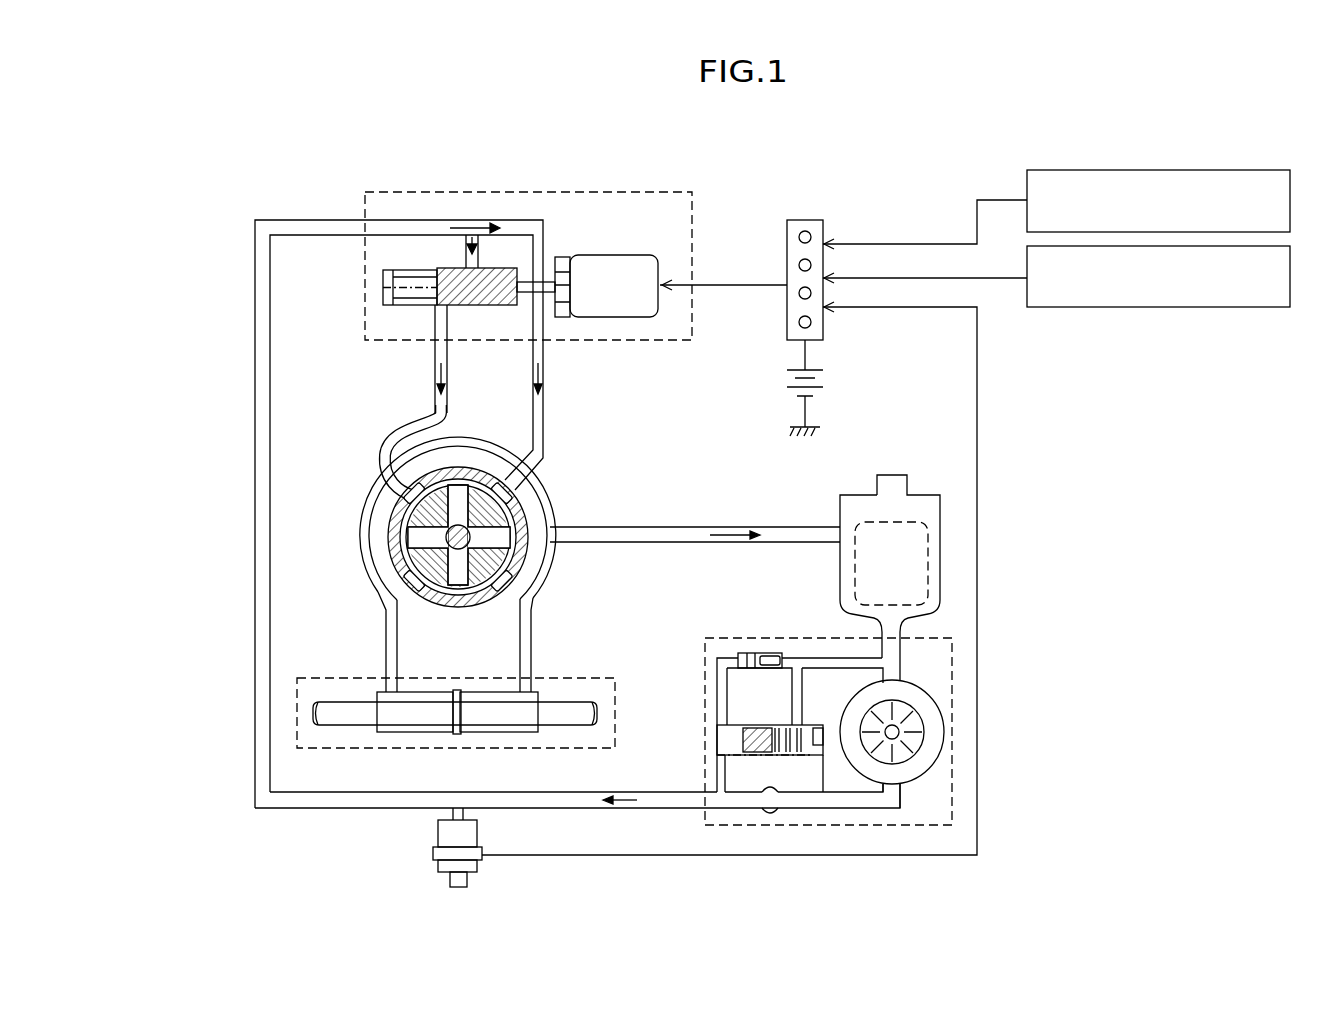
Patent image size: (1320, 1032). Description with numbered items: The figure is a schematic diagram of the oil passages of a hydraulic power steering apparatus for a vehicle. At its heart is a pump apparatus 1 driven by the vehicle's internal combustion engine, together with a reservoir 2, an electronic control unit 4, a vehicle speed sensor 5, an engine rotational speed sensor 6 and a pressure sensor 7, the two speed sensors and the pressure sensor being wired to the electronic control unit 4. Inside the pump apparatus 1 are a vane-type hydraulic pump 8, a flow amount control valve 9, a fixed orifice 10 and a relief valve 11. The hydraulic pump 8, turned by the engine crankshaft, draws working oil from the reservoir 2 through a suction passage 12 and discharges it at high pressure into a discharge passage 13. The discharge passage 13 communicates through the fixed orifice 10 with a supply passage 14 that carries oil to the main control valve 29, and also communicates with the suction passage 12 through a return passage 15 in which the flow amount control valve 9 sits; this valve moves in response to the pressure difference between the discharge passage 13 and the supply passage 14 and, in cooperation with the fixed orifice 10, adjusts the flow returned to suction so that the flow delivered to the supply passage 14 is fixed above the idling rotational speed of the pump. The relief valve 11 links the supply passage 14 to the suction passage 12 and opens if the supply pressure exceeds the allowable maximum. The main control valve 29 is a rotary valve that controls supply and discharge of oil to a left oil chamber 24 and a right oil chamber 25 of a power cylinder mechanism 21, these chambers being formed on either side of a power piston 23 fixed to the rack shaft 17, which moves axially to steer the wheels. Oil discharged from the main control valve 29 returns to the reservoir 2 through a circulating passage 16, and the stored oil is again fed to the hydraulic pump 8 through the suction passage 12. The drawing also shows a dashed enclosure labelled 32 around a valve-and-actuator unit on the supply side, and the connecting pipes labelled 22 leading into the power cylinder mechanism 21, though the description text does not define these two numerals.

The pump apparatus 1 is at (758, 635).
The reservoir 2 is at (920, 495).
The electronic control unit 4 is at (814, 220).
The vehicle speed sensor 5 is at (1228, 170).
The engine rotational speed sensor 6 is at (1238, 307).
The pressure sensor 7 is at (433, 855).
The hydraulic pump 8 is at (945, 700).
The flow amount control valve 9 is at (764, 730).
The fixed orifice 10 is at (770, 808).
The relief valve 11 is at (746, 670).
The suction passage 12 is at (902, 670).
The discharge passage 13 is at (870, 825).
The supply passage 14 is at (257, 640).
The return passage 15 is at (805, 708).
The circulating passage 16 is at (685, 527).
The rack shaft 17 is at (578, 725).
The power cylinder mechanism 21 is at (572, 675).
The connecting pipes 22 is at (440, 692).
The power piston 23 is at (455, 734).
The left oil chamber 24 is at (398, 732).
The right oil chamber 25 is at (510, 732).
The main control valve 29 is at (532, 492).
The flow control valve unit 32 is at (604, 185).